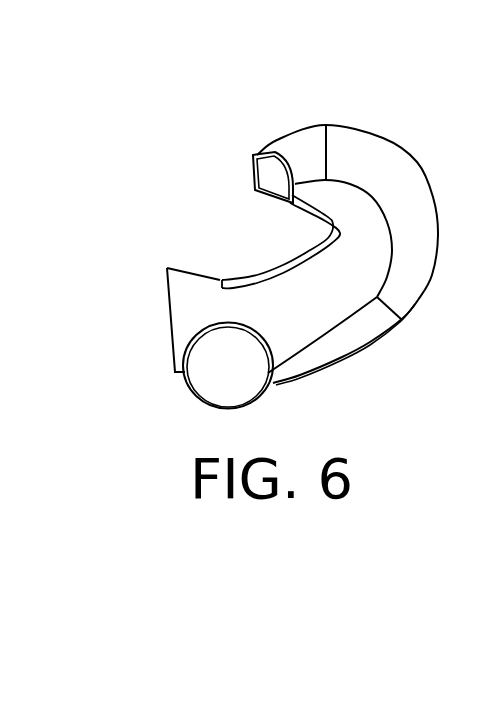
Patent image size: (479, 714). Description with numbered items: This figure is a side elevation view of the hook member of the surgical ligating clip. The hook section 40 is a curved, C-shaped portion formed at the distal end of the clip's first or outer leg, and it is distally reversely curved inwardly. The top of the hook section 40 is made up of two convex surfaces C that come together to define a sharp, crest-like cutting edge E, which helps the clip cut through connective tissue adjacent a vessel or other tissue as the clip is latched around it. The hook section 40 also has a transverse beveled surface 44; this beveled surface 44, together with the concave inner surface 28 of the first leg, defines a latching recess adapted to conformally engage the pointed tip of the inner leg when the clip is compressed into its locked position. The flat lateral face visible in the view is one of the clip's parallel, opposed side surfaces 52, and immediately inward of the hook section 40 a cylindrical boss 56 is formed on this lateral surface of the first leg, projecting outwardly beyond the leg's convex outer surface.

The hook section 40 is at (250, 95).
The cutting edge E is at (362, 133).
The convex surfaces C is at (392, 178).
The concave inner surface 28 is at (187, 268).
The beveled surface 44 is at (302, 212).
The side surface 52 is at (318, 325).
The cylindrical boss 56 is at (246, 375).